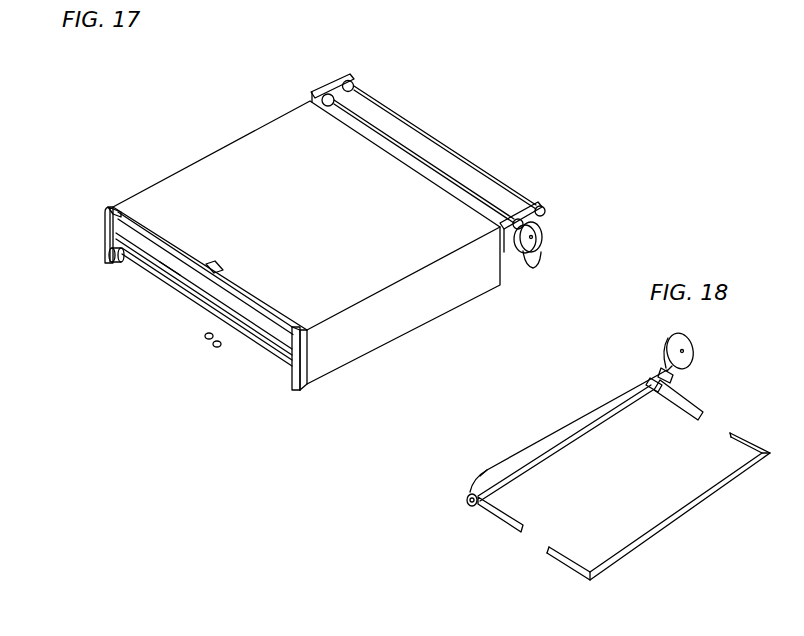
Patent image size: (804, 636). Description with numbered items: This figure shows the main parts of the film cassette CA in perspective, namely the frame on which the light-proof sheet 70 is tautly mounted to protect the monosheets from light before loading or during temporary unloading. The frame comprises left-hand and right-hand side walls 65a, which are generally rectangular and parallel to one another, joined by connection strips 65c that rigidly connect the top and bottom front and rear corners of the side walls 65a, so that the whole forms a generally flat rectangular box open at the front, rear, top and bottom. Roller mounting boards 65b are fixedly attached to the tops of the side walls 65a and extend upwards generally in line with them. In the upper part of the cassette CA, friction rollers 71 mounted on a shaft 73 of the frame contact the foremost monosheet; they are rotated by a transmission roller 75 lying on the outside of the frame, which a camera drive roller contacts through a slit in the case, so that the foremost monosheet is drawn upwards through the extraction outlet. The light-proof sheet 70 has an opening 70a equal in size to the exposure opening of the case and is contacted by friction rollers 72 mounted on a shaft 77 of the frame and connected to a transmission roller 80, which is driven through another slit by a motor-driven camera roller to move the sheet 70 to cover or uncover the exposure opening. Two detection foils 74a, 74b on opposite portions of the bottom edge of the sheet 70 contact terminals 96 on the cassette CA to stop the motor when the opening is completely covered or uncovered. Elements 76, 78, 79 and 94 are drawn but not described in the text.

In FIG. 17, the cassette CA is at (214, 153).
In FIG. 17, the side walls 65a is at (105, 249).
In FIG. 17, the roller mounting boards 65b is at (349, 73).
In FIG. 17, the connection strips 65c is at (207, 288).
In FIG. 17, the light-proof sheet 70 is at (428, 320).
In FIG. 18, the light-proof sheet 70 is at (541, 445).
In FIG. 17, the opening 70a is at (163, 278).
In FIG. 18, the opening 70a is at (553, 523).
In FIG. 17, the friction rollers 71 is at (343, 82).
In FIG. 17, the friction rollers 72 is at (111, 264).
In FIG. 18, the friction rollers 72 is at (477, 507).
In FIG. 17, the shaft 73 is at (393, 145).
In FIG. 17, the detection foil 74a is at (218, 265).
In FIG. 17, the detection foil 74b is at (222, 303).
In FIG. 17, the transmission roller 75 is at (533, 254).
In FIG. 17, the plate 76 is at (110, 223).
In FIG. 17, the shaft 77 is at (135, 258).
In FIG. 18, the shaft 77 is at (583, 432).
In FIG. 18, the hinge bar 78 is at (707, 410).
In FIG. 18, the bracket 79 is at (673, 377).
In FIG. 18, the transmission roller 80 is at (693, 344).
In FIG. 18, the arm 94 is at (498, 507).
In FIG. 17, the contact terminals 96 is at (216, 348).